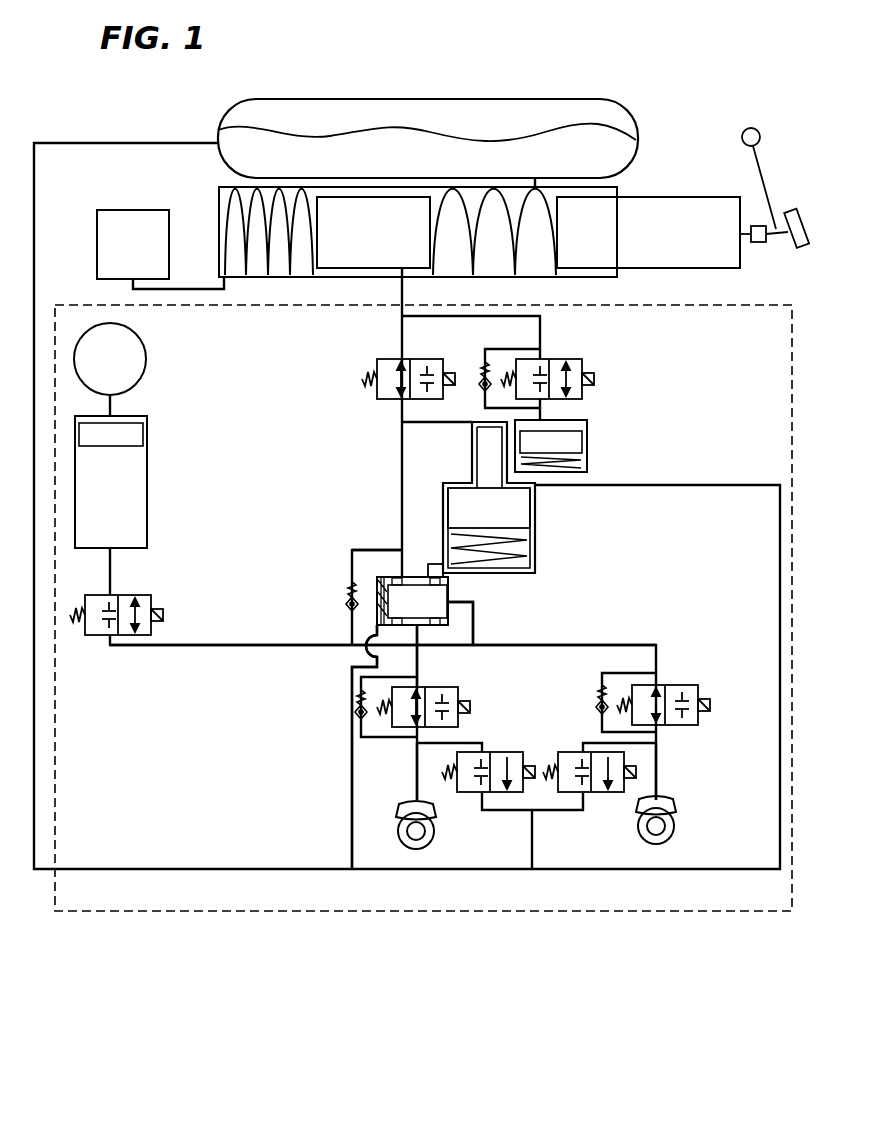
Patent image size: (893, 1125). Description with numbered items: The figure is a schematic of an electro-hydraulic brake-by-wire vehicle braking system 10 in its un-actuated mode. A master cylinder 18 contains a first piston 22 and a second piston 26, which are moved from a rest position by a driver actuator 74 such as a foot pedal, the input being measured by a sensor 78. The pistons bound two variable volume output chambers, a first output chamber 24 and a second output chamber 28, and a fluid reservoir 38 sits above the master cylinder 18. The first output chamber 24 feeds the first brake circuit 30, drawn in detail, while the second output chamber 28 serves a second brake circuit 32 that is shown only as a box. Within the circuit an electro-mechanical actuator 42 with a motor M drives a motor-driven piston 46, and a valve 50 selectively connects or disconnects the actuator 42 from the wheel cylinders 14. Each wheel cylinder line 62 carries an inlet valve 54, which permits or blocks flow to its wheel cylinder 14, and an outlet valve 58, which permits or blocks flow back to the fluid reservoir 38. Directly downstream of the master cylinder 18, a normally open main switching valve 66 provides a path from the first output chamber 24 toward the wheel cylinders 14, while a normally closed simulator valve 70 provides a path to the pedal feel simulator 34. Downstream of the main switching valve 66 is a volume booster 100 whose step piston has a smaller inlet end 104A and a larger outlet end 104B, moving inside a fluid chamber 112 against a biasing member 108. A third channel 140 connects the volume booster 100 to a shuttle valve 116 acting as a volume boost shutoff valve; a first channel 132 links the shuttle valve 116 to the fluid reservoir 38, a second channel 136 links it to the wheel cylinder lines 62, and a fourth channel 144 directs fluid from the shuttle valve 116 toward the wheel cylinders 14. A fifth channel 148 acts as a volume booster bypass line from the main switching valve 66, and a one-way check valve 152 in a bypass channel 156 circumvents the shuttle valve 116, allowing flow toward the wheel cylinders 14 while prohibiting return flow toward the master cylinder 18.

The vehicle braking system 10 is at (686, 50).
The wheel cylinder 14 is at (436, 812).
The master cylinder 18 is at (438, 234).
The first piston 22 is at (648, 232).
The first output chamber 24 is at (520, 272).
The second piston 26 is at (373, 232).
The second output chamber 28 is at (290, 272).
The first brake circuit 30 is at (303, 912).
The second brake circuit 32 is at (133, 244).
The pedal feel simulator 34 is at (588, 428).
The fluid reservoir 38 is at (450, 110).
The electro-mechanical actuator 42 is at (166, 362).
The motor-driven piston 46 is at (138, 436).
The valve 50 is at (148, 607).
The inlet valve 54 is at (453, 697).
The outlet valve 58 is at (488, 748).
The wheel cylinder line 62 is at (412, 762).
The main switching valve 66 is at (378, 395).
The simulator valve 70 is at (583, 398).
The driver actuator 74 is at (786, 153).
The sensor 78 is at (757, 245).
The volume booster 100 is at (530, 504).
The inlet end 104A is at (483, 448).
The outlet end 104B is at (527, 505).
The biasing member 108 is at (520, 545).
The fluid chamber 112 is at (525, 545).
The shuttle valve 116 is at (447, 583).
The first channel 132 is at (350, 782).
The second channel 136 is at (477, 625).
The third channel 140 is at (432, 565).
The fourth channel 144 is at (420, 636).
The fifth channel 148 is at (397, 537).
The one-way check valve 152 is at (348, 600).
The bypass channel 156 is at (350, 640).